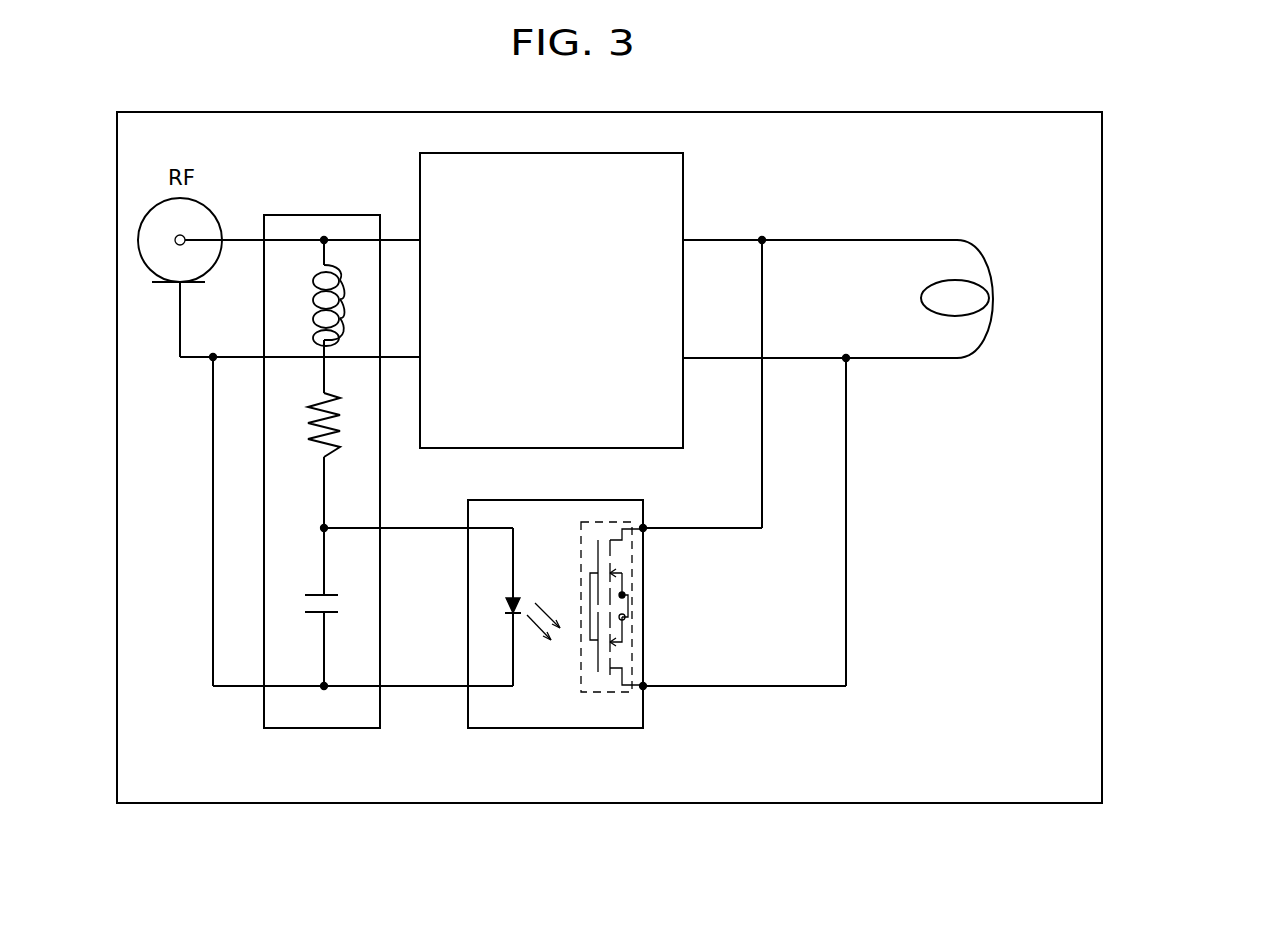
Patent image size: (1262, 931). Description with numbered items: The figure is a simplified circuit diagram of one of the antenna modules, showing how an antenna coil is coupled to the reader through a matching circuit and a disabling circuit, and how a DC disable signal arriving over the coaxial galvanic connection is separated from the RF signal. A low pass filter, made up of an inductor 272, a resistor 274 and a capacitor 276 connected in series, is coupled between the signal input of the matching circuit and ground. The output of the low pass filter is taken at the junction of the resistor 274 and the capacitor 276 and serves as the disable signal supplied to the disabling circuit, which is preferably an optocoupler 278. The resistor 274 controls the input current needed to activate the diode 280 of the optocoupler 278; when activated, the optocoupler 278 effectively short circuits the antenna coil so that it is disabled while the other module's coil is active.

The inductor 272 is at (338, 262).
The resistor 274 is at (310, 425).
The capacitor 276 is at (312, 617).
The optocoupler 278 is at (632, 578).
The diode 280 is at (513, 602).